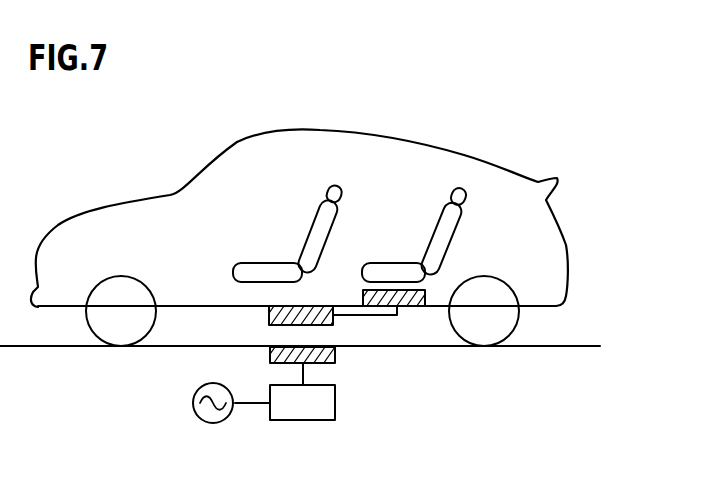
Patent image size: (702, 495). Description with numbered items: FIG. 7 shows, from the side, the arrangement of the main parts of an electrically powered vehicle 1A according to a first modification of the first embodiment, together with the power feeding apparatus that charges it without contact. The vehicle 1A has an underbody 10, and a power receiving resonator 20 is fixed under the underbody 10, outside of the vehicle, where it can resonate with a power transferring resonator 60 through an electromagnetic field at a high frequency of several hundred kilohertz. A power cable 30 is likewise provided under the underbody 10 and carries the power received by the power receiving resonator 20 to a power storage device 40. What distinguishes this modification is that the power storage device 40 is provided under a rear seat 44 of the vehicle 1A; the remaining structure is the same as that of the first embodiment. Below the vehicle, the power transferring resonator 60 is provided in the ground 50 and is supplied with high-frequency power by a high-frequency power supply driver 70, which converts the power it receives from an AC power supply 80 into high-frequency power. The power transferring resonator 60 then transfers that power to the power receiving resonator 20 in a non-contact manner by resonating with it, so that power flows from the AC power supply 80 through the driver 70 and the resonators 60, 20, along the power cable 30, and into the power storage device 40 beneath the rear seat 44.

The electrically powered vehicle 1A is at (318, 130).
The underbody 10 is at (194, 300).
The power receiving resonator 20 is at (266, 317).
The power cable 30 is at (367, 317).
The power storage device 40 is at (412, 306).
The rear seat 44 is at (391, 262).
The ground 50 is at (550, 346).
The power transferring resonator 60 is at (327, 365).
The high-frequency power supply driver 70 is at (302, 420).
The AC power supply 80 is at (212, 424).